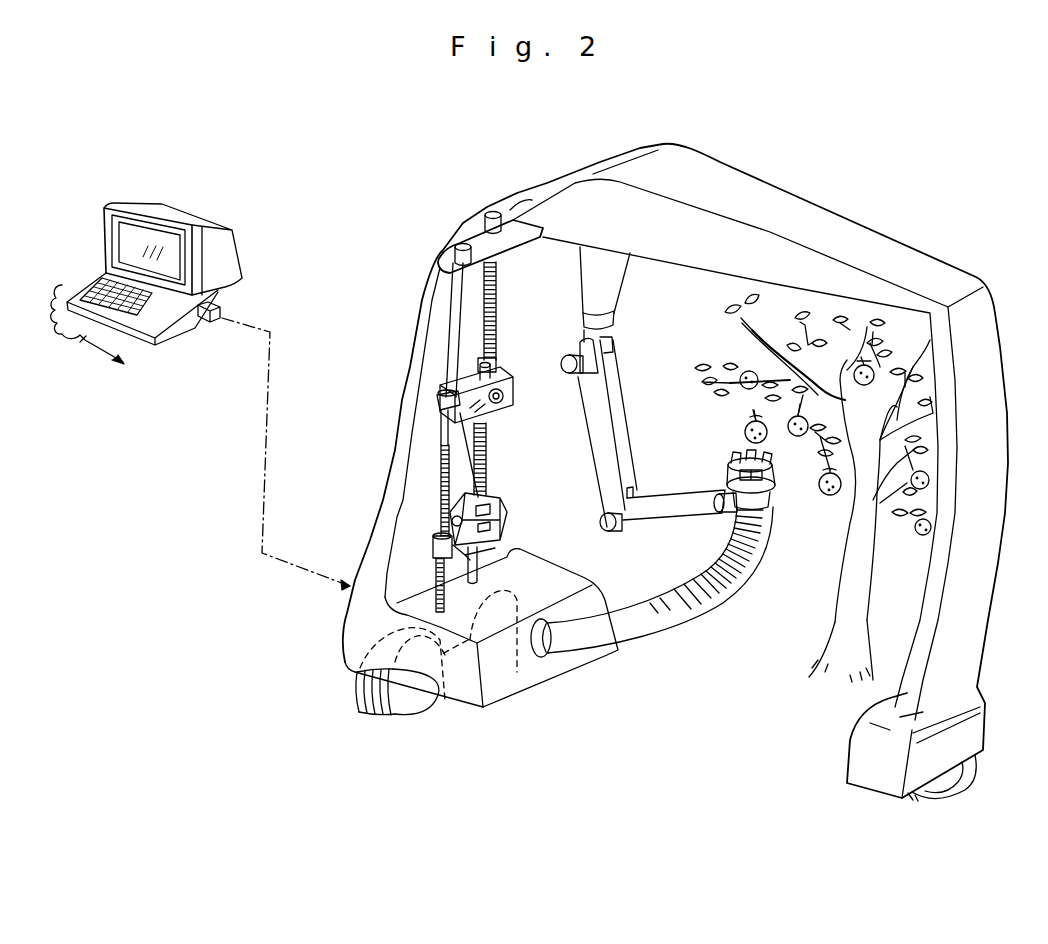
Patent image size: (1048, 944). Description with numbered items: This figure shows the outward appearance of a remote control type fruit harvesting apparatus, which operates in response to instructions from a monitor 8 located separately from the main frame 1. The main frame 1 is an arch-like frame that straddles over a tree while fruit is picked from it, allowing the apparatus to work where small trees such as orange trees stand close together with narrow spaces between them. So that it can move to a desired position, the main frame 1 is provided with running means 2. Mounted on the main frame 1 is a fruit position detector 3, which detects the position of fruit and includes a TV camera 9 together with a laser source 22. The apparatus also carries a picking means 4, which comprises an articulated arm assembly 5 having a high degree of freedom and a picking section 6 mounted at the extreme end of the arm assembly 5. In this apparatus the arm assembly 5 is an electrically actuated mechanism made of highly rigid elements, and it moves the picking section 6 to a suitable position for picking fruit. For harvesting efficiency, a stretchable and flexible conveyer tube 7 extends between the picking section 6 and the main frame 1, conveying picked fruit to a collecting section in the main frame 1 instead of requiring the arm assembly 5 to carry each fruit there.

The main frame 1 is at (838, 214).
The running means 2 is at (388, 712).
The fruit position detector 3 is at (553, 432).
The picking means 4 is at (678, 400).
The articulated arm assembly 5 is at (627, 385).
The picking section 6 is at (722, 481).
The conveyer tube 7 is at (733, 587).
The monitor 8 is at (257, 233).
The TV camera 9 is at (500, 422).
The laser source 22 is at (487, 490).